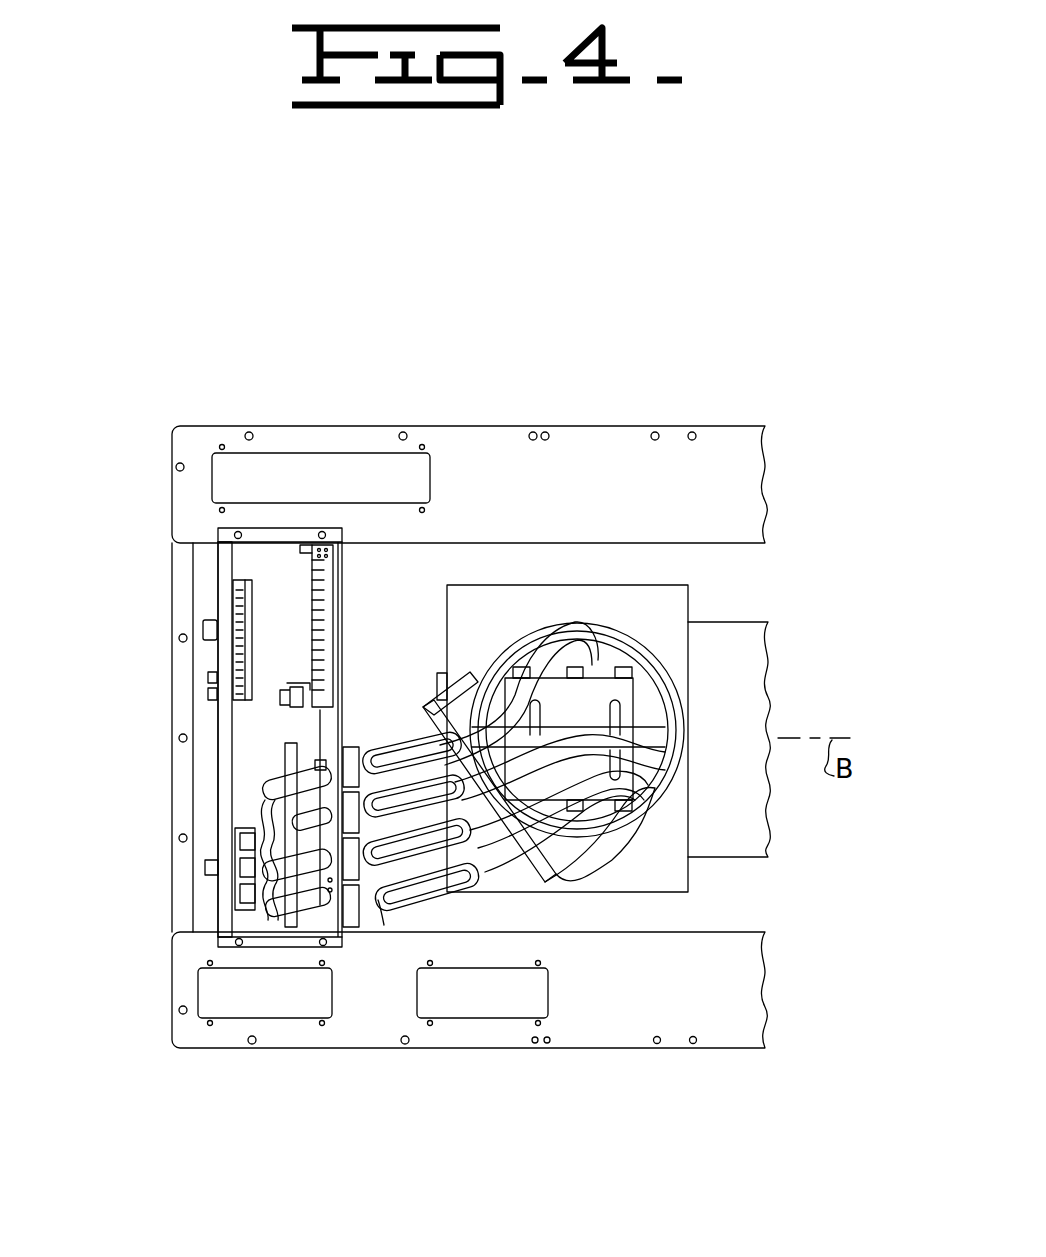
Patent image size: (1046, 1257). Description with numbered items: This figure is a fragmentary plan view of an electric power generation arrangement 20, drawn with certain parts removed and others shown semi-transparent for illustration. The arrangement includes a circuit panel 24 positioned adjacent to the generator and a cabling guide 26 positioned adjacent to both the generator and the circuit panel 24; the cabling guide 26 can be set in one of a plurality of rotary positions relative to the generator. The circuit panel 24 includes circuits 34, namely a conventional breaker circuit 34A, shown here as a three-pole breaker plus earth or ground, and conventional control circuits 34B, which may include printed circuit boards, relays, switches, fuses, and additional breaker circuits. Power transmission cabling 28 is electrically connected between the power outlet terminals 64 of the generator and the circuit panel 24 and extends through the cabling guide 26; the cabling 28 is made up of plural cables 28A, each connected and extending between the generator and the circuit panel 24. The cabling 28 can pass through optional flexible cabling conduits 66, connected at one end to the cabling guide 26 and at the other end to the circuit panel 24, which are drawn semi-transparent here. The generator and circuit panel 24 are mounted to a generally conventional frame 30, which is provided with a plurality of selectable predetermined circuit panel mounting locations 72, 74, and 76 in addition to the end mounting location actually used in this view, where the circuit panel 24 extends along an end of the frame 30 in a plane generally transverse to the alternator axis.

The electric power generation arrangement 20 is at (723, 358).
The circuit panel 24 is at (227, 533).
The cabling guide 26 is at (655, 663).
The power transmission cabling 28 is at (533, 733).
The cable 28A is at (600, 770).
The frame 30 is at (703, 1017).
The circuits 34 is at (253, 752).
The breaker circuit 34A is at (228, 868).
The control circuits 34B is at (240, 607).
The power outlet terminals 64 is at (588, 817).
The flexible cabling conduit 66 is at (384, 925).
The circuit panel mounting location 72 is at (343, 470).
The circuit panel mounting location 74 is at (230, 1002).
The circuit panel mounting location 76 is at (453, 998).